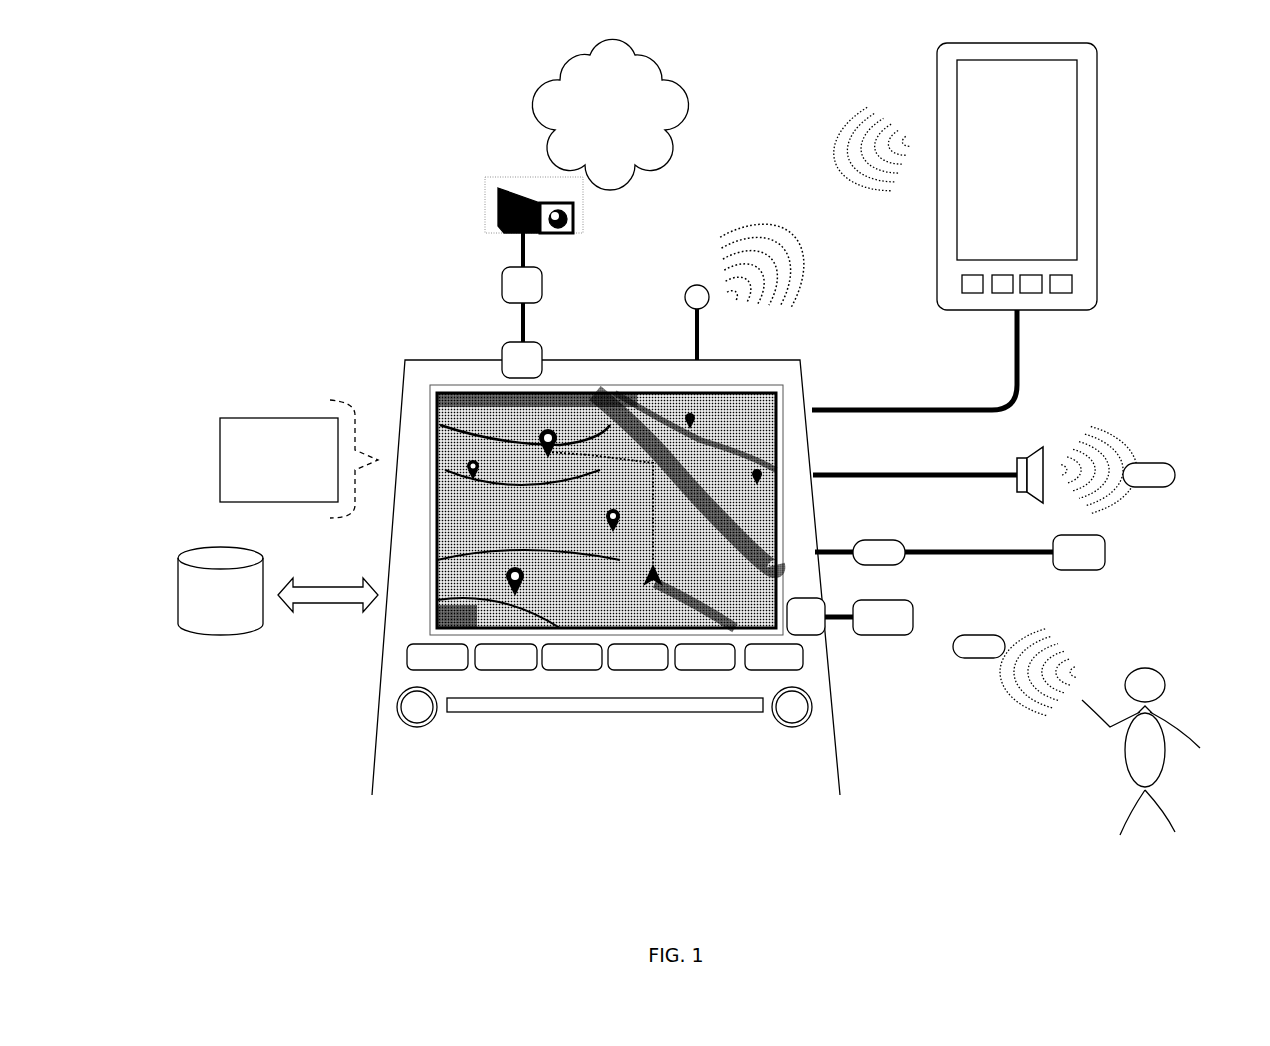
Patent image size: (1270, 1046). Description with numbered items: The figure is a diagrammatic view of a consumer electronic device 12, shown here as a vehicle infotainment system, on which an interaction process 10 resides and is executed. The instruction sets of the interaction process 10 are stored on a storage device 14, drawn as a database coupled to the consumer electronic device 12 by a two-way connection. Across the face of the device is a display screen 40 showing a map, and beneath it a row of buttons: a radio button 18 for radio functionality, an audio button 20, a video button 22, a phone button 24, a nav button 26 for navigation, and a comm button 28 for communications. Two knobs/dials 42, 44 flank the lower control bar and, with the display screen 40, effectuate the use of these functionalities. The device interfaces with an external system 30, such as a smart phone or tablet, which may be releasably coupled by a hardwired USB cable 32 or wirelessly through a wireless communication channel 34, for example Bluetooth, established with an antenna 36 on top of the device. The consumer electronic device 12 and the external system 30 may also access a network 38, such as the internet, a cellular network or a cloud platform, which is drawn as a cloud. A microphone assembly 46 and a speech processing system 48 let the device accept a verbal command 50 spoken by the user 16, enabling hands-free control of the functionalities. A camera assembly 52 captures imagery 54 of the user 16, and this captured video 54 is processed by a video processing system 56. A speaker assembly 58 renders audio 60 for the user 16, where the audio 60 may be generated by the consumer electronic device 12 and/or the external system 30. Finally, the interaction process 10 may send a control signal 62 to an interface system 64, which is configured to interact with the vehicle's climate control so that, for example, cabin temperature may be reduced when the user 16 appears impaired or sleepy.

The interaction process 10 is at (220, 435).
The consumer electronic device 12 is at (392, 358).
The storage device 14 is at (278, 591).
The user 16 is at (1170, 684).
The radio button 18 is at (452, 670).
The audio button 20 is at (519, 670).
The video button 22 is at (586, 670).
The phone button 24 is at (653, 670).
The nav button 26 is at (720, 670).
The comm button 28 is at (803, 657).
The external system 30 is at (960, 176).
The USB cable 32 is at (930, 405).
The wireless communication channel 34 is at (757, 158).
The antenna 36 is at (688, 330).
The network 38 is at (610, 114).
The display screen 40 is at (783, 390).
The knob/dial 42 is at (403, 723).
The knob/dial 44 is at (797, 727).
The microphone assembly 46 is at (869, 617).
The speech processing system 48 is at (806, 616).
The verbal command 50 is at (1014, 672).
The camera assembly 52 is at (495, 200).
The imagery 54 is at (522, 268).
The video processing system 56 is at (522, 340).
The speaker assembly 58 is at (1020, 455).
The audio 60 is at (1118, 470).
The control signal 62 is at (934, 552).
The interface system 64 is at (1079, 552).